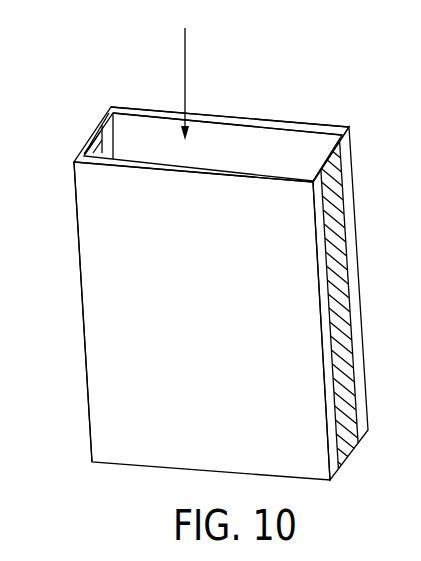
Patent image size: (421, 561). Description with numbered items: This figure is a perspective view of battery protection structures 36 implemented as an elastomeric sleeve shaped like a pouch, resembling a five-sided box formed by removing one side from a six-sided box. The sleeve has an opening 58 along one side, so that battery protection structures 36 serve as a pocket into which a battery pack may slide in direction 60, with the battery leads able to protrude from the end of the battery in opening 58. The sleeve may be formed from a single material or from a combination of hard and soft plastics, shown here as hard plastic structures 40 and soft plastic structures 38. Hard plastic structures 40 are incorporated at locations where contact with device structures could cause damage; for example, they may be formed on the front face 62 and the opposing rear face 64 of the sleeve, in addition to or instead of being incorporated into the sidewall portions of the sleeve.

The battery protection structures 36 is at (75, 401).
The soft plastic structures 38 is at (100, 241).
The hard plastic structures 40 is at (97, 138).
The opening 58 is at (290, 128).
The direction 60 is at (185, 58).
The front face 62 is at (222, 285).
The rear face 64 is at (240, 108).